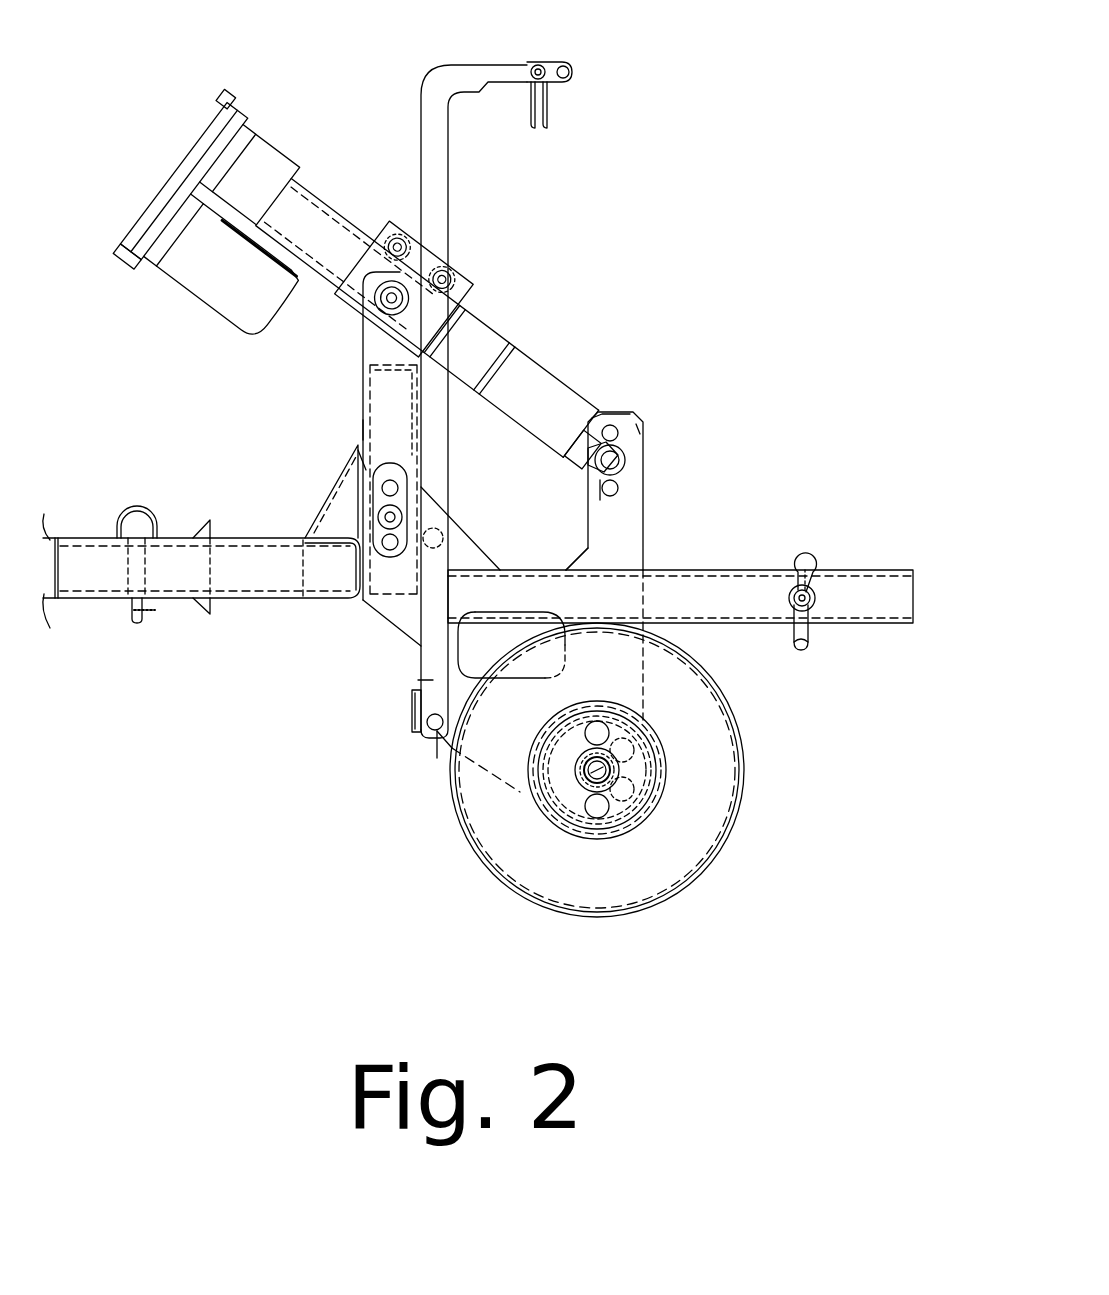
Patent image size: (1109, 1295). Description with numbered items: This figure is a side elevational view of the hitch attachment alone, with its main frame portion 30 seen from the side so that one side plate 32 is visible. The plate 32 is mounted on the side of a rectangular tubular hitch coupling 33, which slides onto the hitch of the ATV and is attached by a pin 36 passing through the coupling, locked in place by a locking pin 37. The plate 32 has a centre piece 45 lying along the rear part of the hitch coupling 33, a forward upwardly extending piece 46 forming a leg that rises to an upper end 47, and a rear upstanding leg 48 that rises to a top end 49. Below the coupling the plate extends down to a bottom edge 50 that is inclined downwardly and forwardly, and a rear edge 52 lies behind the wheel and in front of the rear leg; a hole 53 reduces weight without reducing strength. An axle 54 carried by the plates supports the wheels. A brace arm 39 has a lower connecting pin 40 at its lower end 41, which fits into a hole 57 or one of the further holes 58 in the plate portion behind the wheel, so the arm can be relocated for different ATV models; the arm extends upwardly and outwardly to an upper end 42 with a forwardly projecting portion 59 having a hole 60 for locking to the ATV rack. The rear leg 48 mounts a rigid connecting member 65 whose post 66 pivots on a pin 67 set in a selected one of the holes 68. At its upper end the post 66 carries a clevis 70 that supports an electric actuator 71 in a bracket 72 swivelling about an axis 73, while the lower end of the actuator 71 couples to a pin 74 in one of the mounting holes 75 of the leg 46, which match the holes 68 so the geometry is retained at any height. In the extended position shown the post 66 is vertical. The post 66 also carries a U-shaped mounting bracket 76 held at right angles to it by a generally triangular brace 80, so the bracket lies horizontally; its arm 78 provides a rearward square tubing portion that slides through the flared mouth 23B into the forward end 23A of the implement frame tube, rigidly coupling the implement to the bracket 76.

The forward end 23A is at (82, 538).
The flared mouth 23B is at (200, 532).
The main frame portion 30 is at (614, 556).
The side plate 32 is at (632, 476).
The hitch coupling 33 is at (760, 570).
The pin 36 is at (794, 608).
The locking pin 37 is at (822, 555).
The brace arm 39 is at (440, 228).
The lower connecting pin 40 is at (437, 758).
The lower end 41 is at (433, 680).
The upper end 42 is at (530, 66).
The centre piece 45 is at (520, 590).
The upwardly extending piece 46 is at (633, 443).
The upper end 47 is at (604, 410).
The upstanding leg 48 is at (400, 455).
The top end 49 is at (380, 456).
The bottom edge 50 is at (505, 790).
The rear edge 52 is at (646, 510).
The hole 53 is at (522, 620).
The axle 54 is at (600, 770).
The hole 57 is at (433, 734).
The holes 58 is at (424, 550).
The forwardly projecting portion 59 is at (548, 82).
The hole 60 is at (570, 72).
The rigid connecting member 65 is at (250, 527).
The post 66 is at (362, 413).
The pin 67 is at (350, 496).
The holes 68 is at (360, 572).
The clevis 70 is at (372, 344).
The electric actuator 71 is at (297, 217).
The bracket 72 is at (418, 242).
The axis 73 is at (385, 302).
The pin 74 is at (600, 466).
The mounting holes 75 is at (646, 420).
The mounting bracket 76 is at (177, 582).
The arm 78 is at (231, 582).
The triangular brace 80 is at (346, 492).